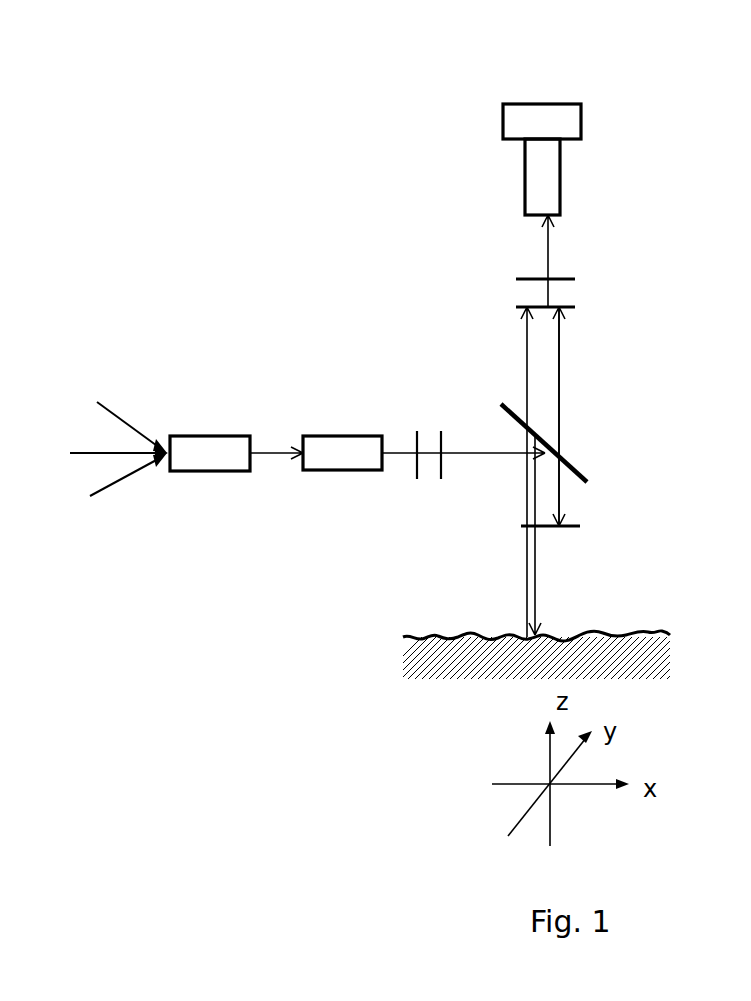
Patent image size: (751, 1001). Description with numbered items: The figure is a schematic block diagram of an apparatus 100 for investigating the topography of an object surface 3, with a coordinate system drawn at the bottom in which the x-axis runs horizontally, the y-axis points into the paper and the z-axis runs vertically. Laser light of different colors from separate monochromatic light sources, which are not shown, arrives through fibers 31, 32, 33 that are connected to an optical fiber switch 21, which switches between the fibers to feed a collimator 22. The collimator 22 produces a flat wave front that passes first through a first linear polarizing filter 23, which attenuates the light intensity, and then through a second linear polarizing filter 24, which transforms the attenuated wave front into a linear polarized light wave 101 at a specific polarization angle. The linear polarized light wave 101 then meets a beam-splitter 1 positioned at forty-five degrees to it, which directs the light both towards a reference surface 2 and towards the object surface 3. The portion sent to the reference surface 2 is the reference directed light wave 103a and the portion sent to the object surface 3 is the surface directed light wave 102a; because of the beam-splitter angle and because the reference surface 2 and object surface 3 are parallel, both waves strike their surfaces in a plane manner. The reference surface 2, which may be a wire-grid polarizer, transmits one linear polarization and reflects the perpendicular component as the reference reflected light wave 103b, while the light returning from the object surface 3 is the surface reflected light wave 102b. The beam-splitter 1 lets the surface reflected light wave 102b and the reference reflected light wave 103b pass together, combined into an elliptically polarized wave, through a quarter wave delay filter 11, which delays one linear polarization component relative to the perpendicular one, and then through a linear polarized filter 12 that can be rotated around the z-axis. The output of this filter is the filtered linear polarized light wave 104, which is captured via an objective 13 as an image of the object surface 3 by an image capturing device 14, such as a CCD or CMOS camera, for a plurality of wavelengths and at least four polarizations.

The apparatus 100 is at (126, 150).
The image capturing device 14 is at (563, 122).
The objective 13 is at (547, 197).
The filtered linear polarized light wave 104 is at (547, 245).
The linear polarized filter 12 is at (567, 277).
The quarter wave delay filter 11 is at (563, 307).
The reference reflected light wave 103b is at (562, 365).
The reference directed light wave 103a is at (562, 482).
The beam-splitter 1 is at (595, 470).
The reference surface 2 is at (552, 528).
The linear polarized light wave 101 is at (505, 455).
The surface directed light wave 102a is at (535, 562).
The surface reflected light wave 102b is at (527, 550).
The object surface 3 is at (617, 637).
The optical fiber switch 21 is at (190, 437).
The collimator 22 is at (365, 437).
The first linear polarizing filter 23 is at (417, 470).
The second linear polarizing filter 24 is at (441, 448).
The fiber 31 is at (109, 419).
The fiber 32 is at (99, 454).
The fiber 33 is at (109, 485).